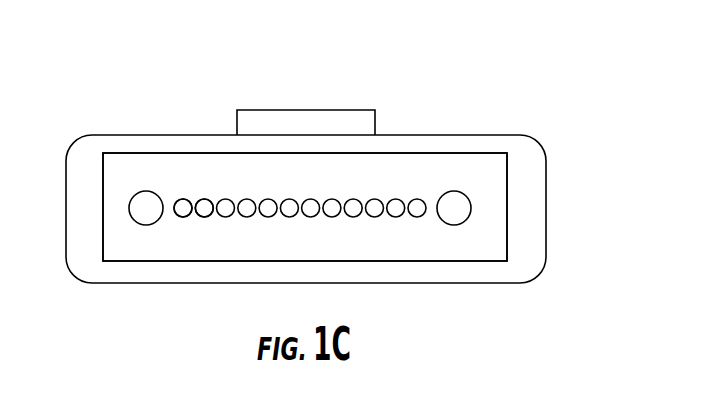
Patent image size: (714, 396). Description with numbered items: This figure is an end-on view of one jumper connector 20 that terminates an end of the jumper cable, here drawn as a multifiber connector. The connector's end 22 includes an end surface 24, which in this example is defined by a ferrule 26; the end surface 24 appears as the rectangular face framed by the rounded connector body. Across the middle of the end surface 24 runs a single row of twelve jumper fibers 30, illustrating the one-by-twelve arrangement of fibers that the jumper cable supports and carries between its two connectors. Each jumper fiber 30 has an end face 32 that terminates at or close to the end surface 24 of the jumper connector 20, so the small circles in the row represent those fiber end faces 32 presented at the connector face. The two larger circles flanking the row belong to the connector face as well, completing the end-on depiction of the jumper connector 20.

The jumper connector 20 is at (322, 188).
The end 22 is at (510, 161).
The end surface 24 is at (436, 167).
The ferrule 26 is at (403, 153).
The jumper fibers 30 is at (183, 208).
The end faces 32 is at (204, 208).